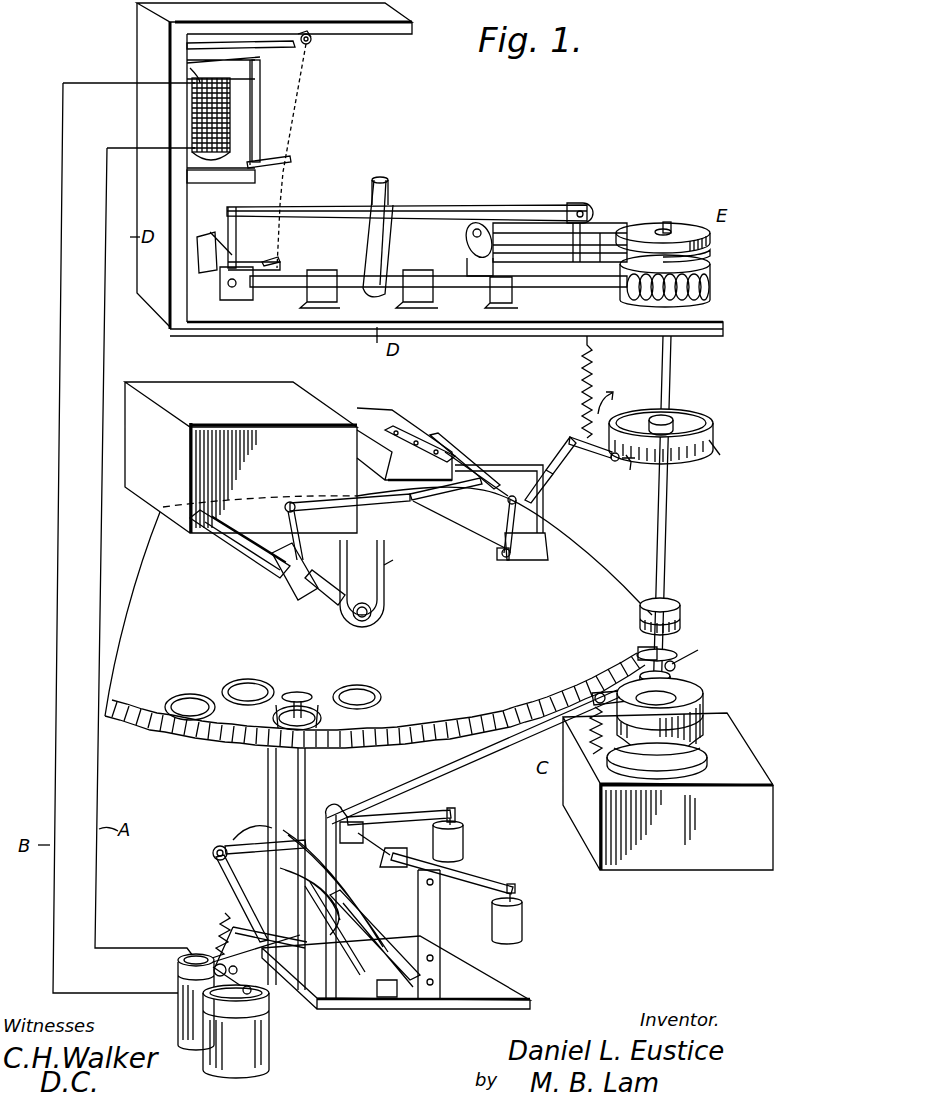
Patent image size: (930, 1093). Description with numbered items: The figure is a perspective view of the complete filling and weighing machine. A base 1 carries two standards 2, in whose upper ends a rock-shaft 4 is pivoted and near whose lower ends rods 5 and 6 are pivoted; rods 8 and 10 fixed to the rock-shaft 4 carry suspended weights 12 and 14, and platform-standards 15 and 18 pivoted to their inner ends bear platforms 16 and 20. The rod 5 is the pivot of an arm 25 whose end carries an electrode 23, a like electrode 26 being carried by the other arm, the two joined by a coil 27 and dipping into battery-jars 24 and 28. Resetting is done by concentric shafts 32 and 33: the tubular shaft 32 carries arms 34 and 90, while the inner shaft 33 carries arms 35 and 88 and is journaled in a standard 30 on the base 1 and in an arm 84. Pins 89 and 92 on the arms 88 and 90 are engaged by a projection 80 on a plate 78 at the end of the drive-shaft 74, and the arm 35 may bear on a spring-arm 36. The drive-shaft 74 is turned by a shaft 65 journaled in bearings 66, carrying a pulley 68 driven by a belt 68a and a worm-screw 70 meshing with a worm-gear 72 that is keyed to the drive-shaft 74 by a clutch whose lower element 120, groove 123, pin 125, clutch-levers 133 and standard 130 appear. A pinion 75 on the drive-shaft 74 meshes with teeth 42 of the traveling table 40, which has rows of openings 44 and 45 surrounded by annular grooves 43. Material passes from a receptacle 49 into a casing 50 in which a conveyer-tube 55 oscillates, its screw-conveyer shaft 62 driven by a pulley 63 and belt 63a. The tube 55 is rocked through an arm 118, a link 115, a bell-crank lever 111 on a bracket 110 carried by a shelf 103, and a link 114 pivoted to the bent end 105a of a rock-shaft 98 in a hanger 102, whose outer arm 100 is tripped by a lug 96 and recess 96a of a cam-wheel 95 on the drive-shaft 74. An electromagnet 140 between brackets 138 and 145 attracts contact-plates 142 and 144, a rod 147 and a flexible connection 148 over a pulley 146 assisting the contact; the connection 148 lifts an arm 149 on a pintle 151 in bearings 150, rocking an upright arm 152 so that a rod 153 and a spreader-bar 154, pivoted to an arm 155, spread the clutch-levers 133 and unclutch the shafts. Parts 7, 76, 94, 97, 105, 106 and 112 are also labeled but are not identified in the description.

The base 1 is at (466, 1004).
The standards 2 is at (344, 812).
The rock-shaft 4 is at (402, 870).
The rod 5 is at (383, 933).
The rod 6 is at (395, 990).
The spring 7 is at (580, 412).
The rod 8 is at (512, 884).
The rod 10 is at (395, 814).
The weight 12 is at (521, 918).
The weight 14 is at (465, 840).
The platform-standard 15 is at (305, 778).
The platform 16 is at (305, 680).
The platform-standard 18 is at (268, 781).
The platform 20 is at (272, 727).
The electrode 23 is at (256, 962).
The battery-jar 24 is at (270, 1052).
The arm 25 is at (278, 944).
The electrode 26 is at (178, 965).
The coil 27 is at (225, 913).
The battery-jar 28 is at (178, 1035).
The standard 30 is at (218, 868).
The tubular shaft 32 is at (465, 757).
The inner shaft 33 is at (212, 850).
The arm 34 is at (268, 826).
The arm 35 is at (250, 845).
The spring-arm 36 is at (366, 975).
The traveling table 40 is at (378, 617).
The teeth 42 is at (458, 722).
The annular grooves 43 is at (165, 705).
The openings 44 is at (188, 700).
The openings 45 is at (370, 690).
The receptacle 49 is at (241, 457).
The casing 50 is at (250, 553).
The conveyer-tube 55 is at (280, 565).
The screw-conveyer shaft 62 is at (325, 594).
The pulley 63 is at (385, 612).
The belt 63a is at (406, 563).
The shaft 65 is at (460, 288).
The bearings 66 is at (370, 302).
The pulley 68 is at (365, 272).
The belt 68a is at (388, 187).
The worm-screw 70 is at (655, 303).
The worm-gear 72 is at (710, 290).
The drive-shaft 74 is at (671, 226).
The pinion 75 is at (681, 610).
The flange 76 is at (700, 742).
The plate 78 is at (703, 693).
The projection 80 is at (680, 672).
The arm 84 is at (670, 652).
The arm 88 is at (676, 664).
The pin 89 is at (700, 652).
The arm 90 is at (592, 722).
The pin 92 is at (600, 780).
The arrow 94 is at (618, 398).
The cam-wheel 95 is at (713, 420).
The lug 96 is at (630, 470).
The recess 96a is at (675, 418).
The gear rim 97 is at (727, 456).
The rock-shaft 98 is at (568, 442).
The outer arm 100 is at (613, 461).
The hanger 102 is at (543, 515).
The shelf 103 is at (405, 432).
The foot 105 is at (548, 548).
The bent end 105a is at (509, 560).
The arm 106 is at (468, 462).
The bracket 110 is at (480, 477).
The bell-crank lever 111 is at (440, 500).
The link 112 is at (507, 501).
The link 114 is at (470, 505).
The link 115 is at (382, 502).
The arm 118 is at (285, 510).
The lower clutch element 120 is at (710, 270).
The circumferential groove 123 is at (710, 252).
The clutch-pin 125 is at (672, 232).
The standard 130 is at (466, 248).
The clutch-levers 133 is at (560, 241).
The bracket 138 is at (193, 178).
The electromagnet 140 is at (192, 118).
The contact-plate 142 is at (290, 160).
The contact-plate 144 is at (258, 49).
The bracket 145 is at (190, 68).
The pulley 146 is at (312, 43).
The rod 147 is at (260, 110).
The flexible connection 148 is at (300, 103).
The horizontal arm 149 is at (280, 260).
The bearings 150 is at (220, 285).
The pintle 151 is at (207, 232).
The upstanding arm 152 is at (236, 235).
The rod 153 is at (320, 217).
The spreader-bar 154 is at (590, 214).
The arm 155 is at (530, 268).